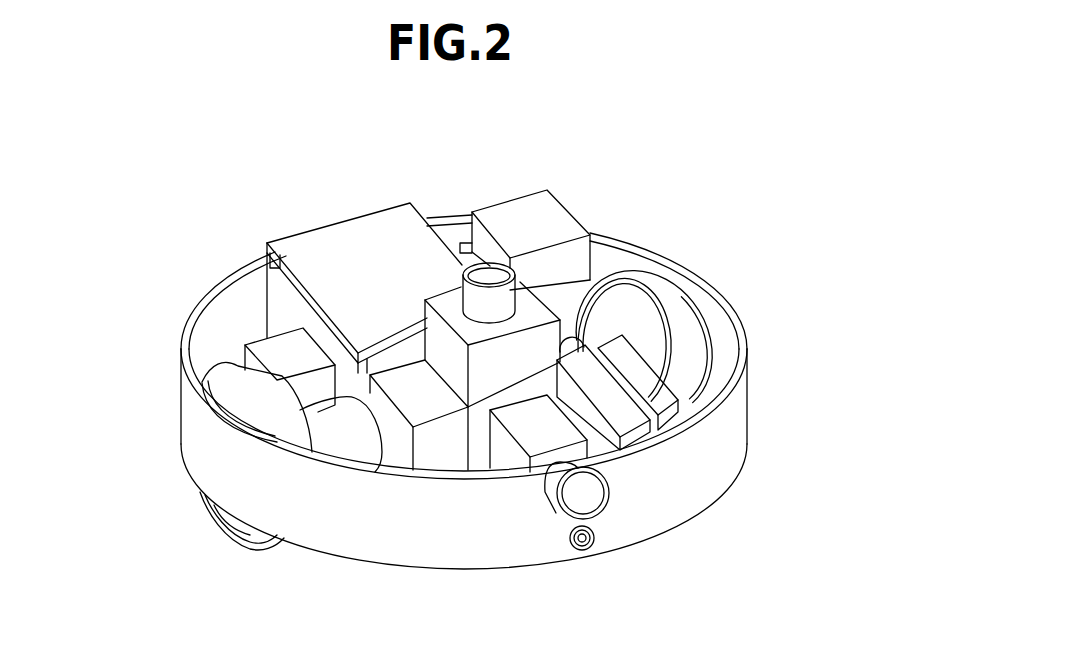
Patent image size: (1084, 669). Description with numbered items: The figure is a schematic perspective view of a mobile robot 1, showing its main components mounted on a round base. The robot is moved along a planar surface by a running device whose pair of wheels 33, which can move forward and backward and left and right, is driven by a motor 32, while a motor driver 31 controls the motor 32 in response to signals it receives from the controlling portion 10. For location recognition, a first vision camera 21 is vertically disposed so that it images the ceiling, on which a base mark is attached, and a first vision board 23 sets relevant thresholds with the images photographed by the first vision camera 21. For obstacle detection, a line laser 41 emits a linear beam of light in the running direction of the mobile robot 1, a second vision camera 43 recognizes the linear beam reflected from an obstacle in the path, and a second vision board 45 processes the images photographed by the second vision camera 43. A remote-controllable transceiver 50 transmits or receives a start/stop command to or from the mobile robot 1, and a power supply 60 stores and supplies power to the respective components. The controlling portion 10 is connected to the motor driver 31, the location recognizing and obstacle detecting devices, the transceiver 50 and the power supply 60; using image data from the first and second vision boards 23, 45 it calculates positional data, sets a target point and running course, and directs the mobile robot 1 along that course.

The mobile robot 1 is at (660, 204).
The controlling portion 10 is at (315, 237).
The first vision camera 21 is at (492, 268).
The first vision board 23 is at (292, 295).
The motor driver 31 is at (667, 400).
The motor 32 is at (343, 447).
The wheels 33 is at (250, 388).
The line laser 41 is at (590, 537).
The second vision camera 43 is at (600, 502).
The second vision board 45 is at (317, 317).
The remote-controllable transceiver 50 is at (440, 467).
The power supply 60 is at (597, 290).